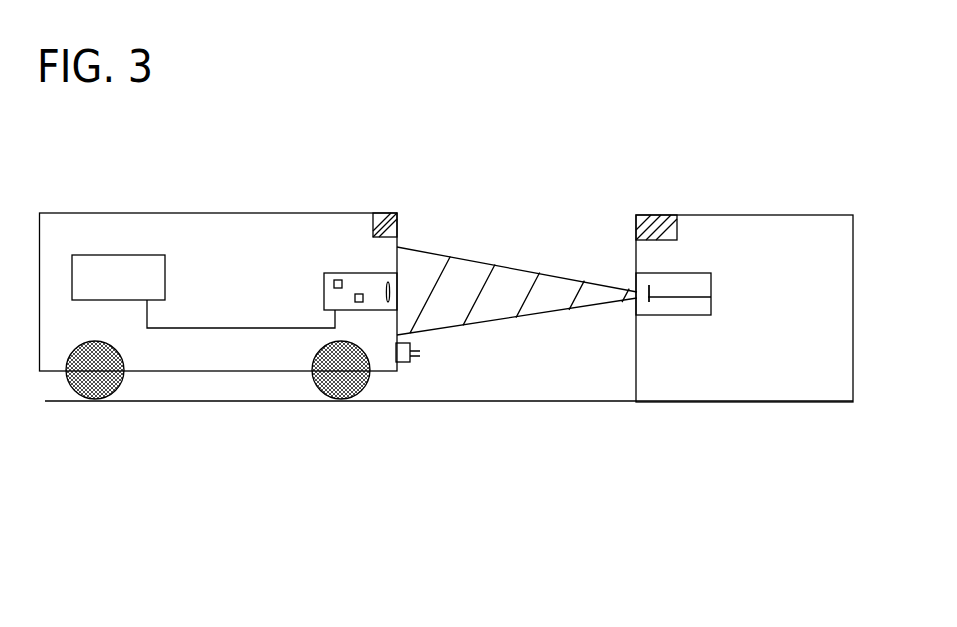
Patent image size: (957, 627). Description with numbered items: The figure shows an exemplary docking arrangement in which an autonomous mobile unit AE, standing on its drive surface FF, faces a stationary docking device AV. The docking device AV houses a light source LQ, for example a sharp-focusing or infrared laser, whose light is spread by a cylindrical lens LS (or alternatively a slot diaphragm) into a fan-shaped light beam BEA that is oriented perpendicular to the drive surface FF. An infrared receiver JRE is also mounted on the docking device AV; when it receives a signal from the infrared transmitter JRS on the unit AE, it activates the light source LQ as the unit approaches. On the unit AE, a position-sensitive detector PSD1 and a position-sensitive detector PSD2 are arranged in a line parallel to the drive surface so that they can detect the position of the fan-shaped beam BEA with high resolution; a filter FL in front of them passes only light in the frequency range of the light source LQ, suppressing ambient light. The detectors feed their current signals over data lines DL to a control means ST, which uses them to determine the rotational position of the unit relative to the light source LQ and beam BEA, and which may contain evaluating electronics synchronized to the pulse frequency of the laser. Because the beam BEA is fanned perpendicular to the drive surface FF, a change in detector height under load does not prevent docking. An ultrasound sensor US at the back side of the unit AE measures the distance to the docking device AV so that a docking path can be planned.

The drive surface FF is at (145, 401).
The autonomous mobile unit AE is at (248, 350).
The control means ST is at (118, 277).
The data lines DL is at (168, 327).
The position-sensitive detector PSD1 is at (338, 280).
The position-sensitive detector PSD2 is at (359, 294).
The filter FL is at (388, 282).
The infrared transmitter JRS is at (386, 213).
The ultrasound sensor US is at (403, 362).
The fan-shaped light beam BEA is at (508, 280).
The docking device AV is at (820, 340).
The infrared receiver JRE is at (657, 215).
The light source LQ is at (711, 297).
The cylindrical lens LS is at (649, 315).